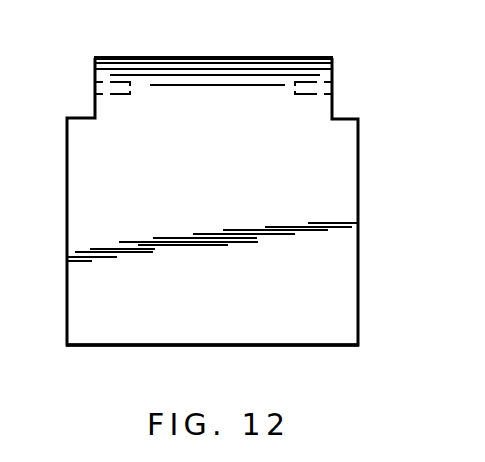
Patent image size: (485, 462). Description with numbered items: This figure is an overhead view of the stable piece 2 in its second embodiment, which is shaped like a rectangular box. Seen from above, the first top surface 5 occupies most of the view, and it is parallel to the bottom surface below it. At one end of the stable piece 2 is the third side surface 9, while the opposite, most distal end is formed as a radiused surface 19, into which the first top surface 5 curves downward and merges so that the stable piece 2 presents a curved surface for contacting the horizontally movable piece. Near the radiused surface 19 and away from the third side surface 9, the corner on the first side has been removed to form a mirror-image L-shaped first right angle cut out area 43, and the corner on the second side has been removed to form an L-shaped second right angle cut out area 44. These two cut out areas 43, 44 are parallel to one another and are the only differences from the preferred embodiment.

The stable piece 2 is at (226, 192).
The radiused surface 19 is at (203, 58).
The first right angle cut out area 43 is at (83, 95).
The second right angle cut out area 44 is at (348, 95).
The first top surface 5 is at (120, 290).
The third side surface 9 is at (205, 346).